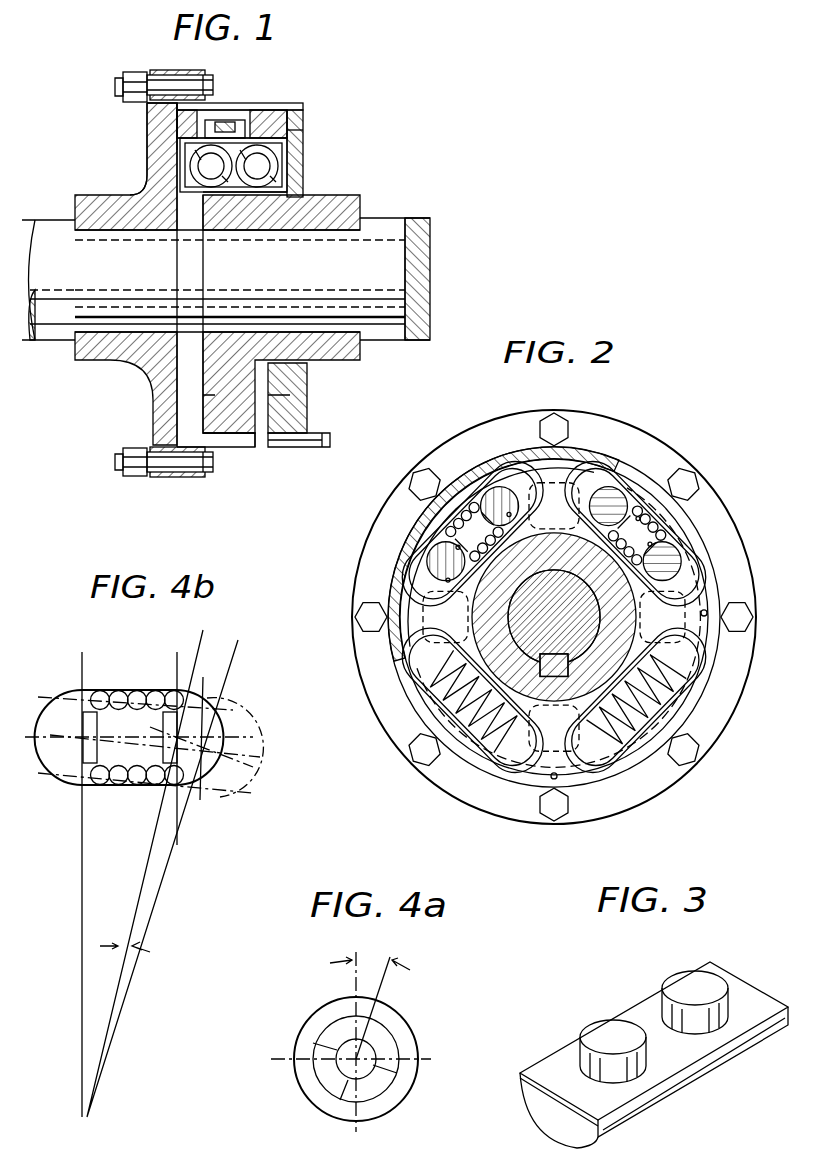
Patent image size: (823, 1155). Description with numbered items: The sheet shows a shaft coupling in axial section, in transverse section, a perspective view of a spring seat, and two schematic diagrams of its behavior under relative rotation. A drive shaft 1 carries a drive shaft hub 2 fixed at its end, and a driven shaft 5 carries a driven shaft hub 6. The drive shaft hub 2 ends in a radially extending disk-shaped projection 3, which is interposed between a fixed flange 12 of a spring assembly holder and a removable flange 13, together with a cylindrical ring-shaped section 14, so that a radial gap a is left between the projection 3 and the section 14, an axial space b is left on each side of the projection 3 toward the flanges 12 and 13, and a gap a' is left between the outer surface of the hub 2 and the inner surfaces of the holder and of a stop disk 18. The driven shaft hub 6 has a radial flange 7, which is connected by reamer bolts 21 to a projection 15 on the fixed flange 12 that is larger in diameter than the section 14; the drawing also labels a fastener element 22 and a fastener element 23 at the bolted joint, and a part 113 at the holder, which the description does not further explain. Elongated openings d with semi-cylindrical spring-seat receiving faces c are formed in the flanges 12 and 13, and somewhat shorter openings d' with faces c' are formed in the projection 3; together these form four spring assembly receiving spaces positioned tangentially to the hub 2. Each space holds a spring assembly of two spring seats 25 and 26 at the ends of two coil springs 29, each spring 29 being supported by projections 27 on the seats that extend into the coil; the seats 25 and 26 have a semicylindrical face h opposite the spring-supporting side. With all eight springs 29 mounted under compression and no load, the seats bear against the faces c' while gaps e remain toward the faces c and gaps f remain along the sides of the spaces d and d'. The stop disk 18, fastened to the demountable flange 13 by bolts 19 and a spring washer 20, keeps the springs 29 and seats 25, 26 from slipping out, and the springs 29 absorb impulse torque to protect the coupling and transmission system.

In FIG. 1, the drive shaft 1 is at (400, 216).
In FIG. 2, the drive shaft 1 is at (520, 600).
In FIG. 1, the drive shaft hub 2 is at (352, 208).
In FIG. 2, the drive shaft hub 2 is at (558, 698).
In FIG. 4a, the drive shaft hub 2 is at (380, 1092).
In FIG. 1, the disk-shaped projection 3 is at (250, 447).
In FIG. 1, the driven shaft 5 is at (52, 220).
In FIG. 1, the driven shaft hub 6 is at (90, 195).
In FIG. 4a, the driven shaft hub 6 is at (322, 1108).
In FIG. 1, the flange 7 is at (135, 170).
In FIG. 1, the fixed flange 12 is at (155, 140).
In FIG. 2, the fixed flange 12 is at (590, 466).
In FIG. 1, the removable flange 13 is at (275, 118).
In FIG. 1, the cylindrical ring-shaped section 14 is at (265, 108).
In FIG. 1, the projection 15 is at (200, 72).
In FIG. 2, the projection 15 is at (650, 445).
In FIG. 1, the stop disk 18 is at (303, 112).
In FIG. 1, the bolts 19 is at (325, 440).
In FIG. 1, the spring washer 20 is at (300, 447).
In FIG. 1, the reamer bolts 21 is at (214, 95).
In FIG. 2, the reamer bolts 21 is at (558, 425).
In FIG. 1, the bolt head 22 is at (136, 74).
In FIG. 1, the bolt 23 is at (150, 100).
In FIG. 2, the spring seat 25 is at (430, 570).
In FIG. 4b, the spring seat 25 is at (66, 786).
In FIG. 3, the spring seat 25 is at (680, 1062).
In FIG. 1, the spring seat 26 is at (284, 198).
In FIG. 2, the spring seat 26 is at (500, 495).
In FIG. 4b, the spring seat 26 is at (225, 730).
In FIG. 1, the projections 27 is at (244, 190).
In FIG. 3, the projections 27 is at (672, 985).
In FIG. 1, the coil springs 29 is at (290, 160).
In FIG. 2, the coil springs 29 is at (440, 530).
In FIG. 4b, the coil springs 29 is at (122, 690).
In FIG. 1, the cover 113 is at (228, 110).
In FIG. 1, the gap a is at (229, 454).
In FIG. 2, the gap a is at (524, 544).
In FIG. 1, the gap a' is at (268, 197).
In FIG. 2, the gap a' is at (554, 617).
In FIG. 1, the space b is at (203, 395).
In FIG. 2, the spring-seat receiving faces c is at (643, 679).
In FIG. 2, the spring-seat receiving faces c' is at (561, 666).
In FIG. 1, the elongated openings d is at (306, 128).
In FIG. 2, the elongated openings d is at (682, 532).
In FIG. 1, the elongated openings d' is at (212, 123).
In FIG. 2, the elongated openings d' is at (674, 506).
In FIG. 2, the gaps e is at (520, 496).
In FIG. 2, the gaps f is at (470, 520).
In FIG. 1, the fillet surface g is at (165, 180).
In FIG. 3, the semicylindrical face h is at (640, 1115).